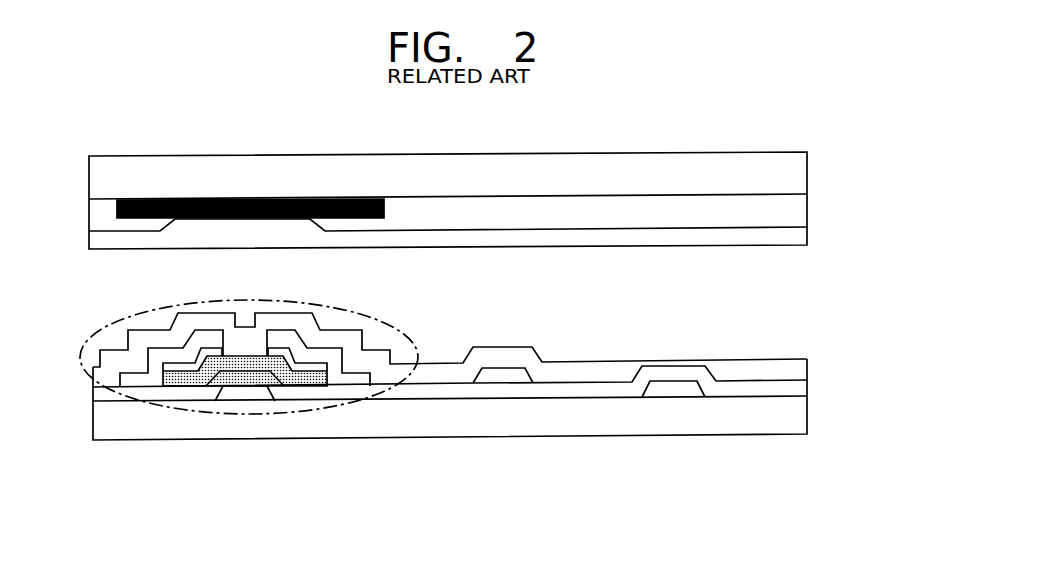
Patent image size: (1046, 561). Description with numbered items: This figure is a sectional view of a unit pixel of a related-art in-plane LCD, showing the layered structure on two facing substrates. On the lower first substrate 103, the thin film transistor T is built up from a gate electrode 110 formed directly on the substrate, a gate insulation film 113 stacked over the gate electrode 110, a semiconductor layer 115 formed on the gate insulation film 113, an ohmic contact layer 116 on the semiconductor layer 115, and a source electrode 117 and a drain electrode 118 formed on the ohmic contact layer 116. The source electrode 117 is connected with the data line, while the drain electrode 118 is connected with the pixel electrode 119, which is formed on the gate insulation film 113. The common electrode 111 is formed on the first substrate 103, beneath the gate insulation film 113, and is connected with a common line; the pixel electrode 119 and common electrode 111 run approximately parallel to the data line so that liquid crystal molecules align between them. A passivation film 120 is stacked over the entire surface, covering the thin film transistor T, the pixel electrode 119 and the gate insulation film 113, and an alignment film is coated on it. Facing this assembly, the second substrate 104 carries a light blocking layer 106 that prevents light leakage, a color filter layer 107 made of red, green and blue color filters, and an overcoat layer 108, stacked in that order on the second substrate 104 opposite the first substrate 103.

The first substrate 103 is at (807, 411).
The second substrate 104 is at (807, 163).
The light blocking layer 106 is at (200, 200).
The color filter layer 107 is at (807, 210).
The overcoat layer 108 is at (807, 236).
The gate electrode 110 is at (247, 396).
The common electrode 111 is at (672, 390).
The gate insulation film 113 is at (807, 385).
The semiconductor layer 115 is at (304, 380).
The ohmic contact layer 116 is at (178, 378).
The source electrode 117 is at (206, 340).
The drain electrode 118 is at (280, 340).
The pixel electrode 119 is at (506, 377).
The passivation film 120 is at (807, 361).
The thin film transistor T is at (113, 323).